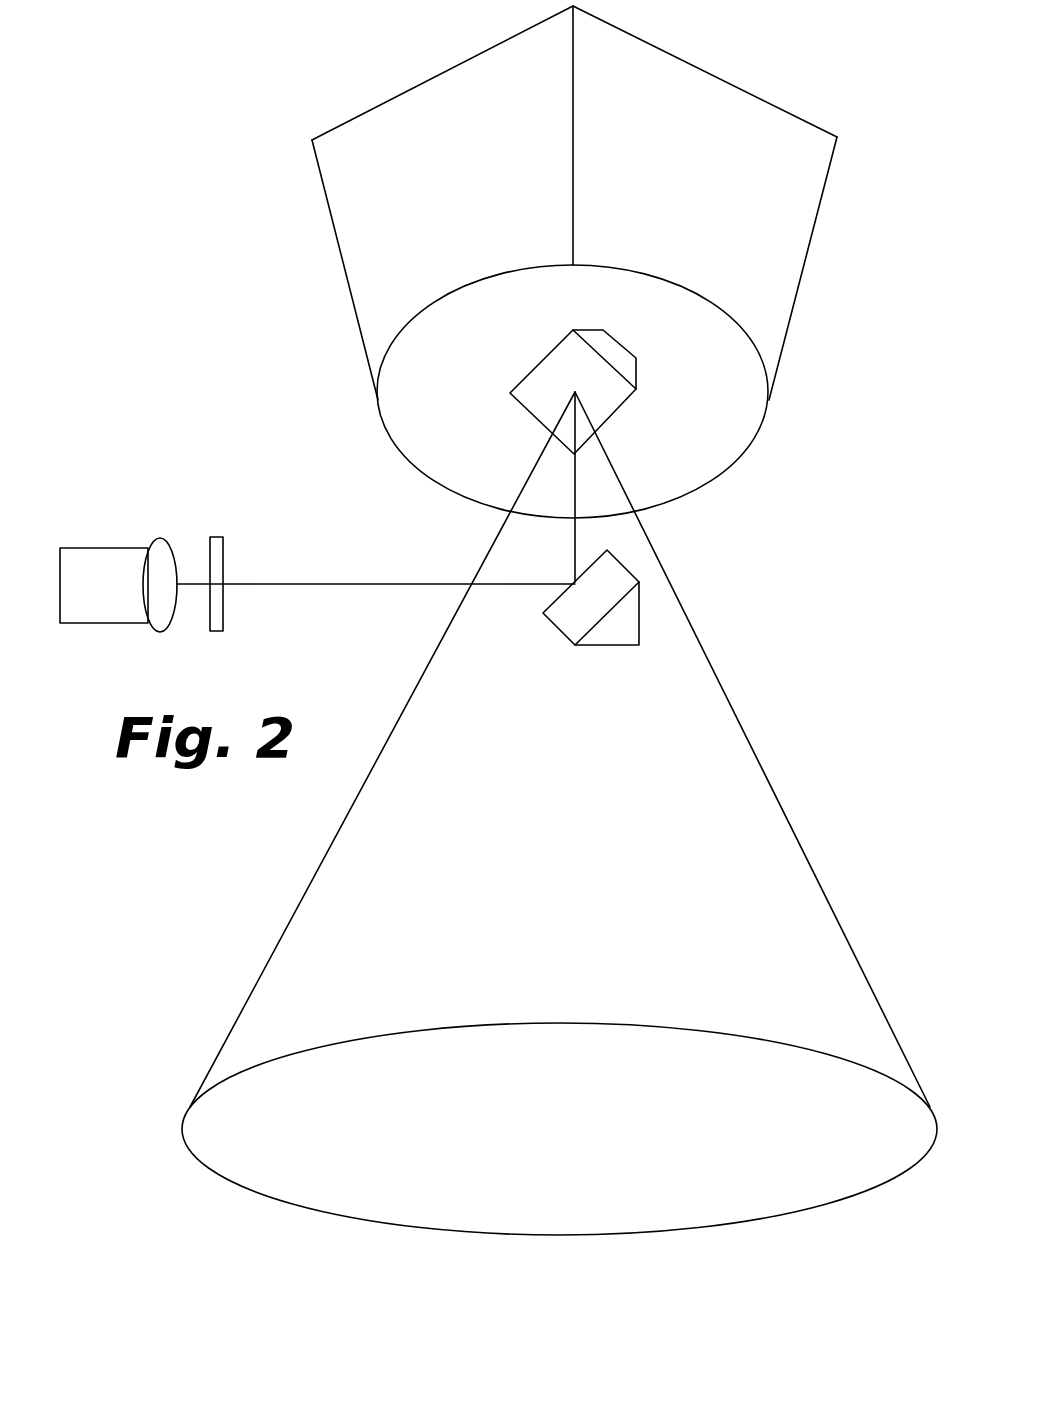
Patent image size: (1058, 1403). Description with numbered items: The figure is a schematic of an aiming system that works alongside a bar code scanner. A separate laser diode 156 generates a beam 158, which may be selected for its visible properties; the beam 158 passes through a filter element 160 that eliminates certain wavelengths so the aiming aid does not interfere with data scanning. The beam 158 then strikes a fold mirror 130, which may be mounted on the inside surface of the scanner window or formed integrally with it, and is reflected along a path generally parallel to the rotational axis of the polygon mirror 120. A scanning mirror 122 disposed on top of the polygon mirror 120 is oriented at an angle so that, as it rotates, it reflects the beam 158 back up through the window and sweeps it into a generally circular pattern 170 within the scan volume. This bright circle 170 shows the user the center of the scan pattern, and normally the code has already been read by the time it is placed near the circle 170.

The polygon mirror 120 is at (803, 273).
The scanning mirror 122 is at (617, 410).
The fold mirror 130 is at (622, 628).
The laser diode 156 is at (105, 547).
The beam 158 is at (303, 583).
The filter element 160 is at (217, 537).
The circular pattern 170 is at (637, 1023).